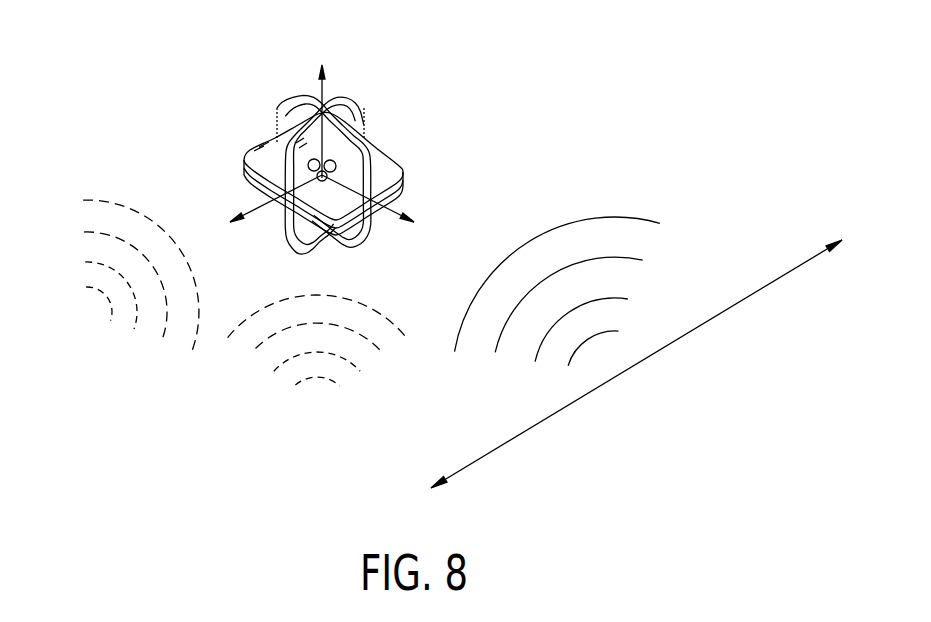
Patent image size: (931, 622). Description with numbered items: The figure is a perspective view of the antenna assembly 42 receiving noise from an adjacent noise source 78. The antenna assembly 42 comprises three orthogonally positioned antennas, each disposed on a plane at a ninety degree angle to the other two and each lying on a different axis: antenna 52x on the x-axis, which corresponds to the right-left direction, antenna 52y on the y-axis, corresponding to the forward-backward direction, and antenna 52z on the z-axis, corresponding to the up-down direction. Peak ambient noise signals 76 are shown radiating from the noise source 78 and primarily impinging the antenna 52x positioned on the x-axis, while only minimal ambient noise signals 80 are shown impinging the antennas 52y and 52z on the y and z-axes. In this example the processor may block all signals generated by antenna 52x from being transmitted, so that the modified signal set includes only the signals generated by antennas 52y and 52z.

The antenna assembly 42 is at (283, 65).
The antenna on the x-axis 52x is at (357, 107).
The antenna on the y-axis 52y is at (384, 163).
The antenna on the z-axis 52z is at (278, 105).
The peak ambient noise signals 76 is at (577, 222).
The noise source 78 is at (677, 342).
The minimal ambient noise signals 80 is at (110, 203).